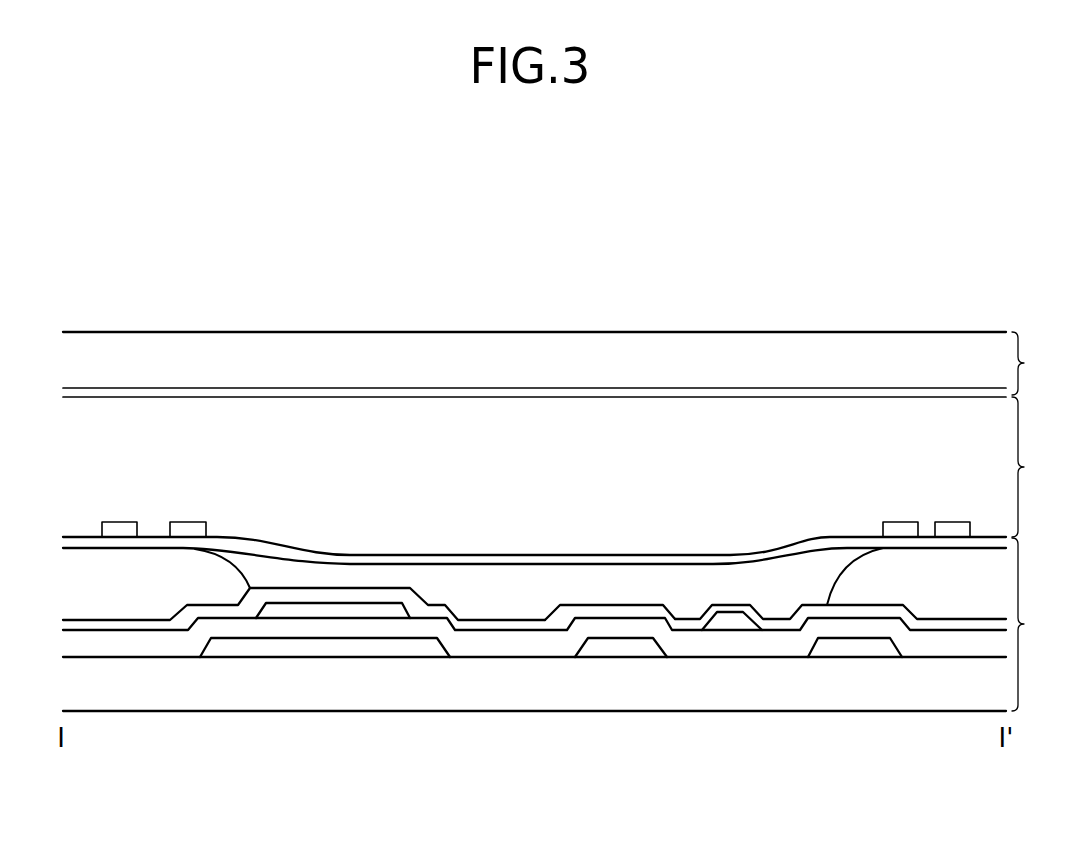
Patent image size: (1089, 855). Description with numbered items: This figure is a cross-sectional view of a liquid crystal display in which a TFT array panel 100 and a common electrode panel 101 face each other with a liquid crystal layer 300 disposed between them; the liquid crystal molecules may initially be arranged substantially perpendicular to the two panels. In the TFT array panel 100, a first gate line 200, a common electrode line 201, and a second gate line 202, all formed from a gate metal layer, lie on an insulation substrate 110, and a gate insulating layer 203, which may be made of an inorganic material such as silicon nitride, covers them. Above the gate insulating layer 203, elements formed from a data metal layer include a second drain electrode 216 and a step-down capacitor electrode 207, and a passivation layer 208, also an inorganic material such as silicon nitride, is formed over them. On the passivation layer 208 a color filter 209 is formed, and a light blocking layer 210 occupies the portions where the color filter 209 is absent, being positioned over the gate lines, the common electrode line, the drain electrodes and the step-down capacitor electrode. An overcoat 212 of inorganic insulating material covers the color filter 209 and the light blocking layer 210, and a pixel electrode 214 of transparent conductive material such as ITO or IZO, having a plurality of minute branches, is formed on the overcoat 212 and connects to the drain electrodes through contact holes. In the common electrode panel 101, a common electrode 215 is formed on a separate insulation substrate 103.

The TFT array panel 100 is at (1041, 624).
The common electrode panel 101 is at (566, 363).
The insulation substrate 103 is at (748, 352).
The insulation substrate 110 is at (225, 683).
The first gate line 200 is at (637, 650).
The common electrode line 201 is at (315, 650).
The second gate line 202 is at (853, 648).
The gate insulating layer 203 is at (475, 643).
The step-down capacitor electrode 207 is at (377, 612).
The passivation layer 208 is at (588, 612).
The color filter 209 is at (137, 595).
The light blocking layer 210 is at (533, 598).
The overcoat 212 is at (237, 538).
The pixel electrode 214 is at (119, 528).
The common electrode 215 is at (565, 393).
The second drain electrode 216 is at (730, 620).
The liquid crystal layer 300 is at (1041, 467).